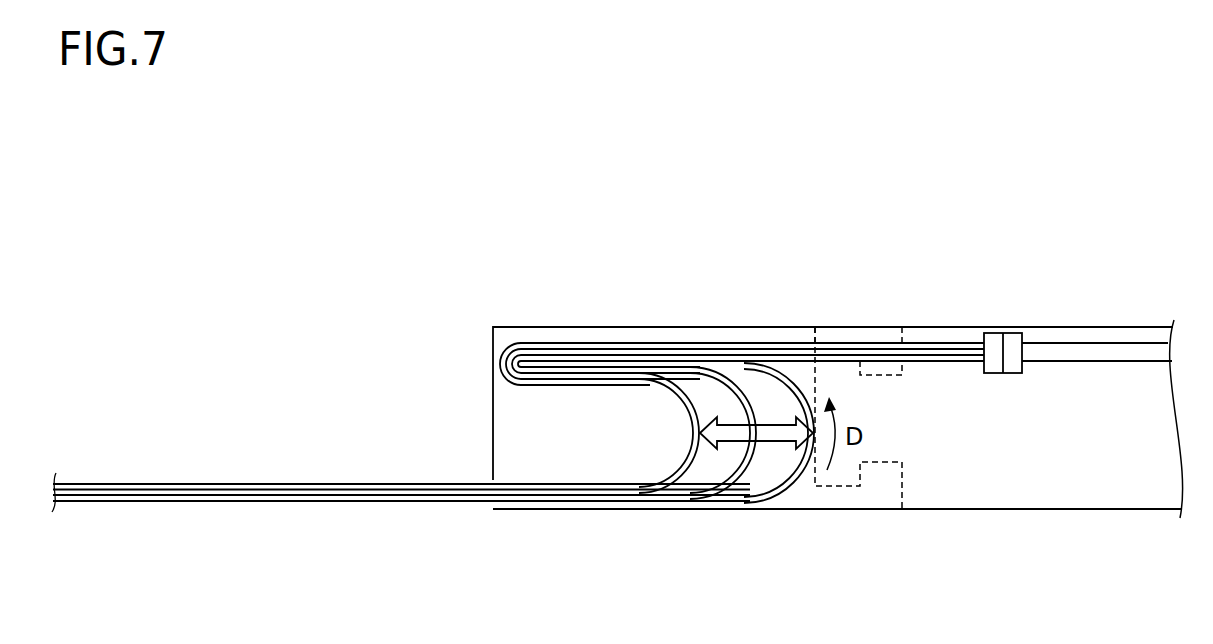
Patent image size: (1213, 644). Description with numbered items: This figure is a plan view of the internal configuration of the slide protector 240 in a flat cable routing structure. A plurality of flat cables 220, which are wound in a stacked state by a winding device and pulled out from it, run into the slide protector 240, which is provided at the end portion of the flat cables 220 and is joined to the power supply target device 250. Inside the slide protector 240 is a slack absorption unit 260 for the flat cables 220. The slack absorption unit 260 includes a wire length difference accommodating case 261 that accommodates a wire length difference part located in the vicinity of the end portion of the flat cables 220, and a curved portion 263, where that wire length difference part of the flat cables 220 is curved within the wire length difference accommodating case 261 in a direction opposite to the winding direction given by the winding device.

The flat cables 220 is at (430, 500).
The slide protector 240 is at (688, 322).
The power supply target device 250 is at (1019, 518).
The slack absorption unit 260 is at (638, 520).
The wire length difference accommodating case 261 is at (541, 510).
The curved portion 263 is at (772, 494).